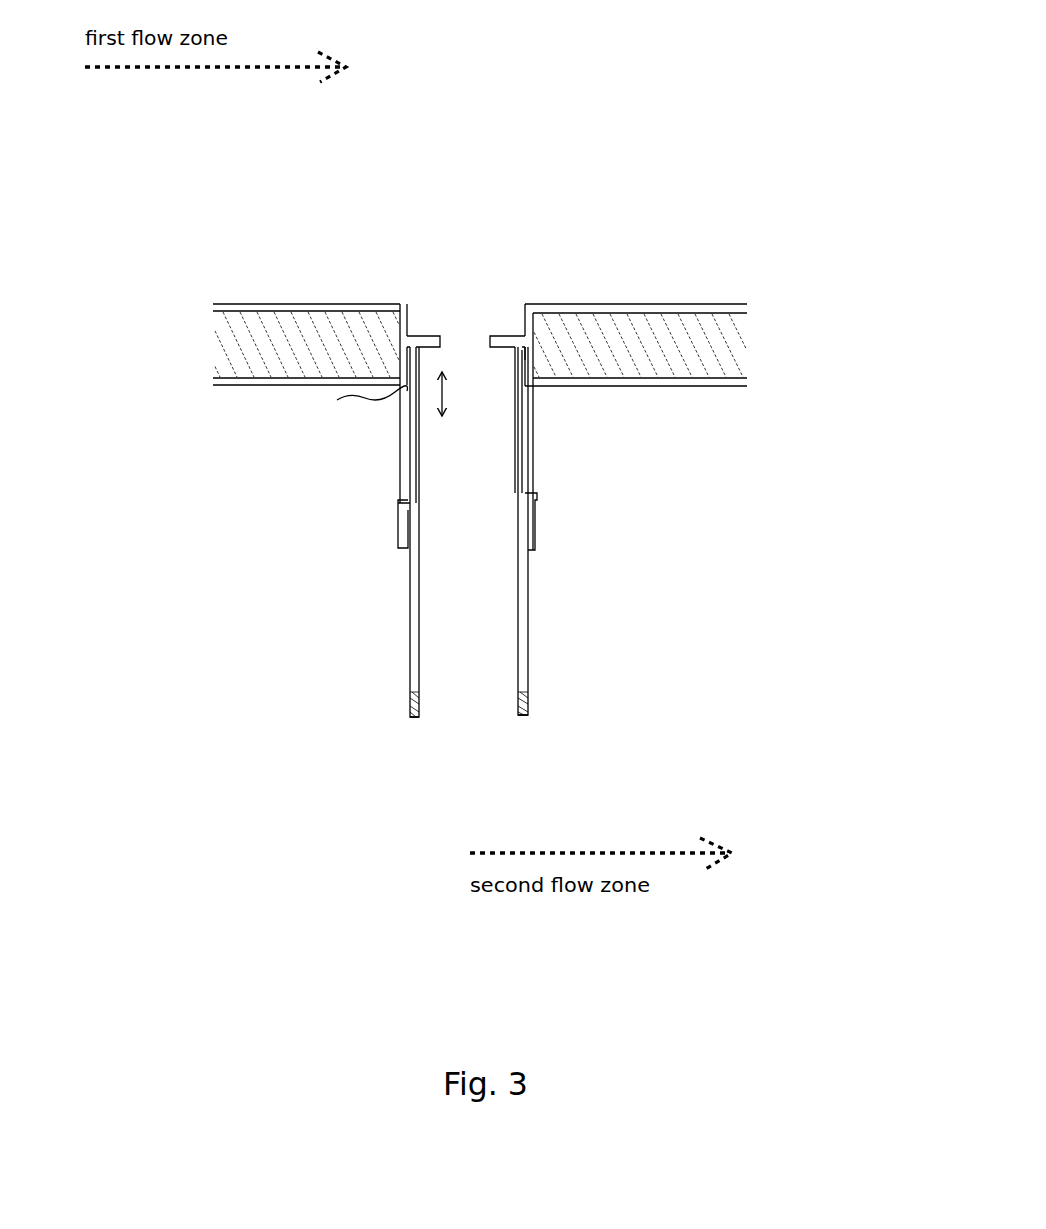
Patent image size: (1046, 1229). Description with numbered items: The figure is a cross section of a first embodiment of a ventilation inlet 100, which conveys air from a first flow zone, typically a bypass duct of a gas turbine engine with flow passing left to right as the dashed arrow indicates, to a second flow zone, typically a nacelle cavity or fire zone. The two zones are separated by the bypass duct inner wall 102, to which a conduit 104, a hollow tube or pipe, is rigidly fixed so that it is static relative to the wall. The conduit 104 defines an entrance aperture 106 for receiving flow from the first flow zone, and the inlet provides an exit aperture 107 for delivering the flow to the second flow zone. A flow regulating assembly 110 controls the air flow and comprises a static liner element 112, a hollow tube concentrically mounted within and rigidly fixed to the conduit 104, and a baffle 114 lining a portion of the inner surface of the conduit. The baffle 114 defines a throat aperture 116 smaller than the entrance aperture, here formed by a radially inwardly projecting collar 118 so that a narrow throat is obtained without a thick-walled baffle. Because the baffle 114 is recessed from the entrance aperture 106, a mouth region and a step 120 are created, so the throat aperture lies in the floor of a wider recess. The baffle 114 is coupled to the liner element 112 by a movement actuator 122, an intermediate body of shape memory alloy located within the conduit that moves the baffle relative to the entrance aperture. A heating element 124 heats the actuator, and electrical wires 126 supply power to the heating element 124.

The ventilation inlet 100 is at (338, 276).
The bypass duct inner wall 102 is at (300, 350).
The conduit 104 is at (404, 349).
The entrance aperture 106 is at (421, 298).
The exit aperture 107 is at (432, 723).
The flow regulating assembly 110 is at (409, 478).
The static liner element 112 is at (528, 621).
The baffle 114 is at (517, 356).
The throat aperture 116 is at (459, 334).
The collar 118 is at (496, 334).
The step 120 is at (513, 312).
The movement actuator 122 is at (411, 437).
The heating element 124 is at (525, 446).
The electrical wires 126 is at (334, 401).